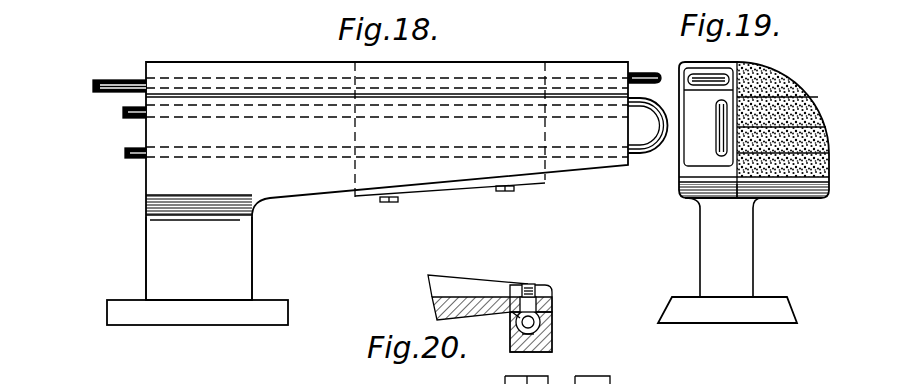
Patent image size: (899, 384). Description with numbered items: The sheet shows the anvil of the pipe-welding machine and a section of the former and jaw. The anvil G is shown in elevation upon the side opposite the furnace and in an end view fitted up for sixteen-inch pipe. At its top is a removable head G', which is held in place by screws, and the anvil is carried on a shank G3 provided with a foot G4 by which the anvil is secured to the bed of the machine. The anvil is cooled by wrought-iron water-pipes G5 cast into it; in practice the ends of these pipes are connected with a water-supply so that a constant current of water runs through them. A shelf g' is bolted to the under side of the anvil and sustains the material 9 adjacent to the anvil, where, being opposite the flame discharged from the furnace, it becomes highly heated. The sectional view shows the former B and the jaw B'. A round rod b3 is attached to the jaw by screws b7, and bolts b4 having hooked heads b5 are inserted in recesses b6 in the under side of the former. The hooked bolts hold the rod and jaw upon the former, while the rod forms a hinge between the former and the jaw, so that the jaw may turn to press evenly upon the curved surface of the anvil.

In FIG. 18, the anvil G is at (387, 181).
In FIG. 19, the anvil G is at (742, 130).
In FIG. 18, the removable head G' is at (387, 52).
In FIG. 19, the removable head G' is at (704, 104).
In FIG. 18, the shank G3 is at (199, 258).
In FIG. 19, the shank G3 is at (723, 247).
In FIG. 18, the foot G4 is at (214, 307).
In FIG. 19, the foot G4 is at (729, 296).
In FIG. 18, the wrought-iron water-pipes G5 is at (124, 151).
In FIG. 19, the wrought-iron water-pipes G5 is at (708, 84).
In FIG. 18, the shelf g' is at (450, 204).
In FIG. 19, the shelf g' is at (773, 206).
In FIG. 19, the material 9 is at (783, 118).
In FIG. 20, the former B is at (477, 297).
In FIG. 20, the jaw B' is at (546, 328).
In FIG. 20, the round rod b3 is at (542, 325).
In FIG. 20, the bolts b4 is at (529, 284).
In FIG. 20, the hooked heads b5 is at (526, 340).
In FIG. 20, the recesses b6 is at (515, 315).
In FIG. 20, the screws b7 is at (557, 378).